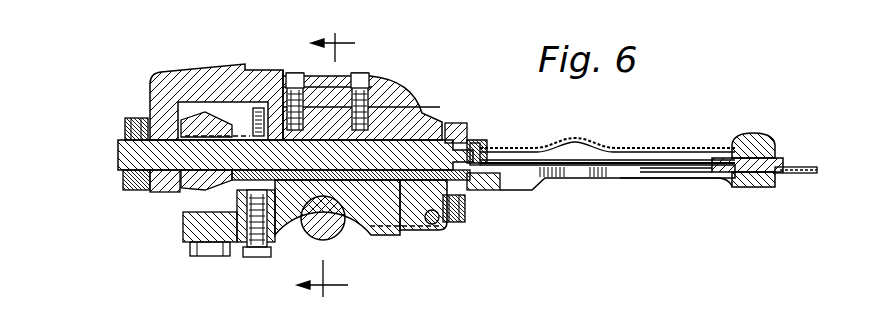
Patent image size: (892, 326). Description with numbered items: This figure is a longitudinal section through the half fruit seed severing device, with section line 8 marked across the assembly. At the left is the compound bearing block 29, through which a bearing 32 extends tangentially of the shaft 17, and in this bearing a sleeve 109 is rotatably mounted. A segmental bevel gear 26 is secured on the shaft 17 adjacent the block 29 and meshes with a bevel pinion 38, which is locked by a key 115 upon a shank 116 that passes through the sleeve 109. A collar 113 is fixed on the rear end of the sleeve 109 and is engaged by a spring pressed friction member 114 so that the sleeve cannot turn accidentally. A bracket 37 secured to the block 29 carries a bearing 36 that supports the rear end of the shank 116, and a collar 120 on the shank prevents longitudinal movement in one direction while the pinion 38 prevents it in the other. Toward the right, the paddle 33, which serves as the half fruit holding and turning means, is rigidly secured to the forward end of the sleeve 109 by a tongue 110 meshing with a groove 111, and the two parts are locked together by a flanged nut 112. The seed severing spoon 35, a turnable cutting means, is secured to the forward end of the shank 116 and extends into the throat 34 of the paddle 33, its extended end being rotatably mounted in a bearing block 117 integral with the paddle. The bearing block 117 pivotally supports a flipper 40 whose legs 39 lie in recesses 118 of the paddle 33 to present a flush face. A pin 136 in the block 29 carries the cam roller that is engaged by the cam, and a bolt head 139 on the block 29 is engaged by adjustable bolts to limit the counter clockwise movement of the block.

The section line 8- 8 is at (326, 166).
The shaft 17 is at (355, 240).
The segmental bevel gear 26 is at (348, 74).
The compound bearing block 29 is at (413, 223).
The bearing 32 is at (380, 91).
The paddle 33 is at (580, 171).
The throat 34 is at (660, 177).
The spoon 35 is at (590, 142).
The bearing 36 is at (150, 187).
The bracket 37 is at (226, 70).
The bevel pinion 38 is at (182, 191).
The legs 39 is at (682, 171).
The flipper 40 is at (800, 174).
The sleeve 109 is at (452, 124).
The tongue 110 is at (470, 139).
The groove 111 is at (480, 143).
The flanged nut 112 is at (462, 209).
The collar 113 is at (258, 100).
The spring pressed friction member 114 is at (190, 229).
The key 115 is at (198, 118).
The shank 116 is at (118, 151).
The bearing block 117 is at (740, 134).
The recesses 118 is at (698, 173).
The collar 120 is at (128, 123).
The pin 136 is at (442, 227).
The bolt head 139 is at (200, 254).